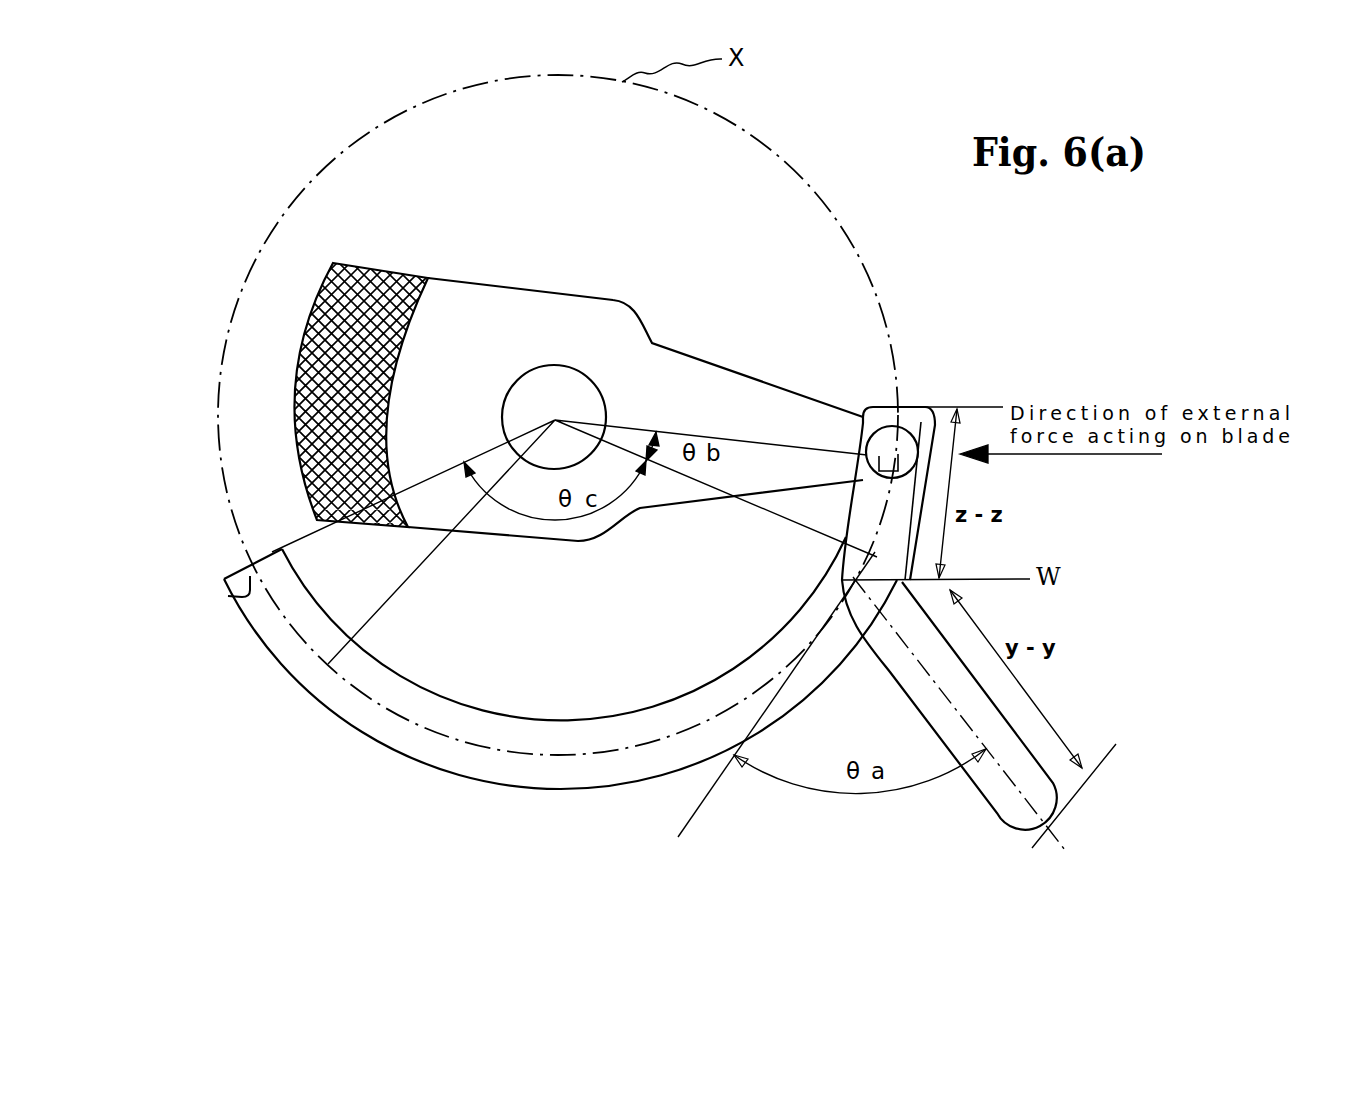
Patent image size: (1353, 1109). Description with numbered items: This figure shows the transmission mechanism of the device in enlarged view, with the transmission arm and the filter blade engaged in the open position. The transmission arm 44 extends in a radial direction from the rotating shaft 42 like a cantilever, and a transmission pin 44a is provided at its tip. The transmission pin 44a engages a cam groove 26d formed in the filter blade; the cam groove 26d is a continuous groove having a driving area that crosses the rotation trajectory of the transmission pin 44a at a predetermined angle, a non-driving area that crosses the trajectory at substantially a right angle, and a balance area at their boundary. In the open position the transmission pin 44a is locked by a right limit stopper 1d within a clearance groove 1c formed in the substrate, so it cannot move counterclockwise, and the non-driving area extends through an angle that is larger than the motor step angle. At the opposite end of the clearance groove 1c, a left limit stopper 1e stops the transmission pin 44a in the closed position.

The transmission arm 44 is at (502, 298).
The rotating shaft 42 is at (558, 394).
The transmission pin 44a is at (888, 456).
The right limit stopper 1d is at (921, 428).
The left limit stopper 1e is at (231, 601).
The clearance groove 1c is at (420, 743).
The cam groove 26d is at (1015, 806).